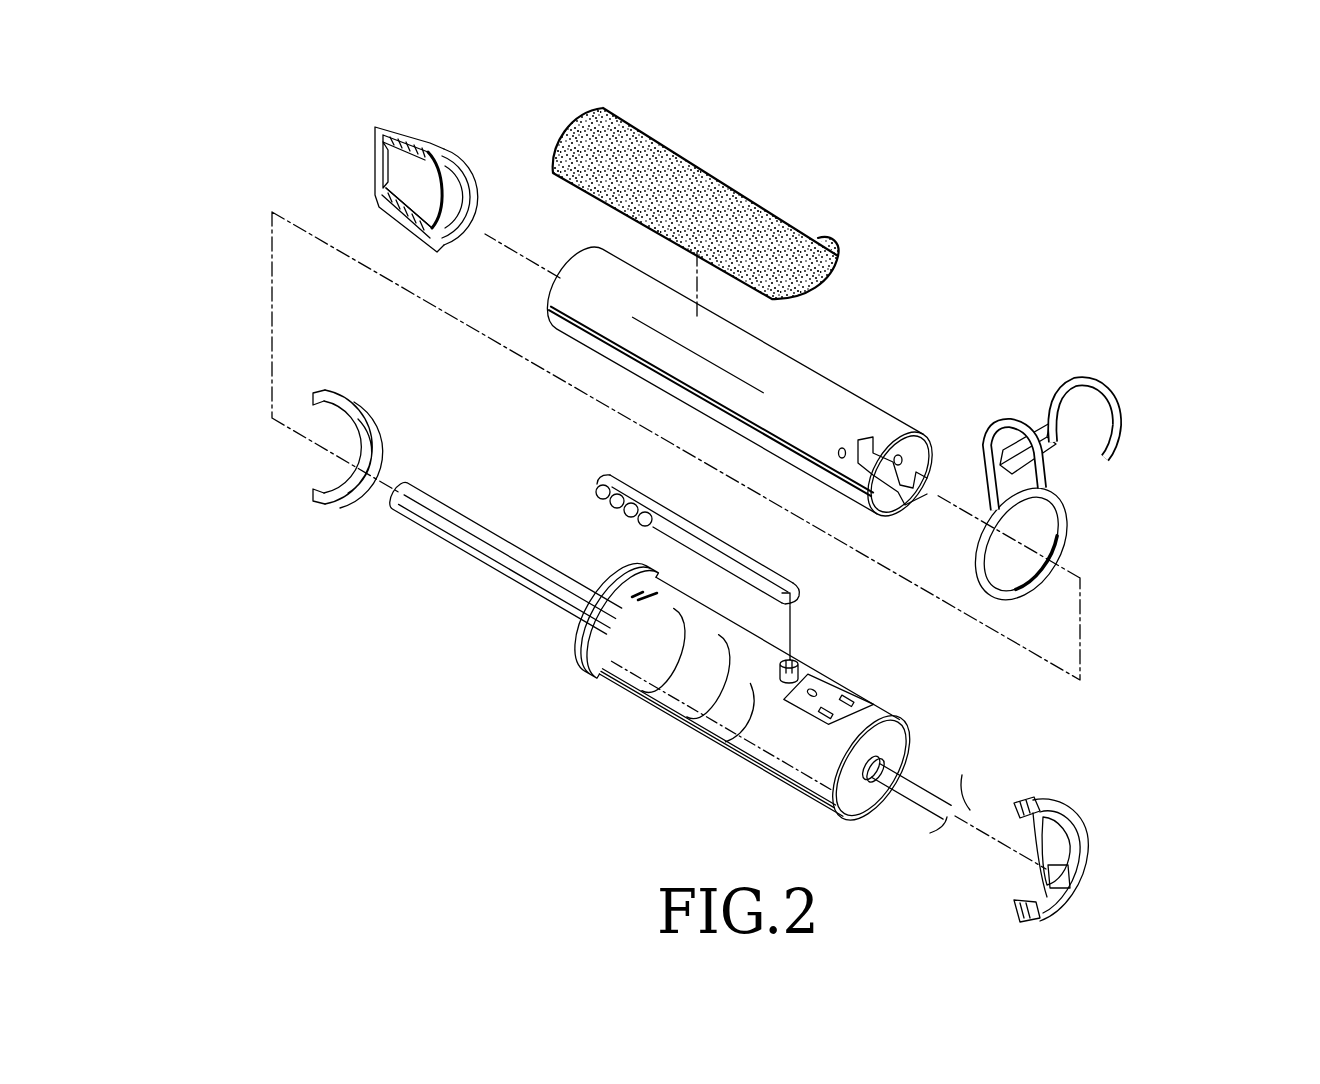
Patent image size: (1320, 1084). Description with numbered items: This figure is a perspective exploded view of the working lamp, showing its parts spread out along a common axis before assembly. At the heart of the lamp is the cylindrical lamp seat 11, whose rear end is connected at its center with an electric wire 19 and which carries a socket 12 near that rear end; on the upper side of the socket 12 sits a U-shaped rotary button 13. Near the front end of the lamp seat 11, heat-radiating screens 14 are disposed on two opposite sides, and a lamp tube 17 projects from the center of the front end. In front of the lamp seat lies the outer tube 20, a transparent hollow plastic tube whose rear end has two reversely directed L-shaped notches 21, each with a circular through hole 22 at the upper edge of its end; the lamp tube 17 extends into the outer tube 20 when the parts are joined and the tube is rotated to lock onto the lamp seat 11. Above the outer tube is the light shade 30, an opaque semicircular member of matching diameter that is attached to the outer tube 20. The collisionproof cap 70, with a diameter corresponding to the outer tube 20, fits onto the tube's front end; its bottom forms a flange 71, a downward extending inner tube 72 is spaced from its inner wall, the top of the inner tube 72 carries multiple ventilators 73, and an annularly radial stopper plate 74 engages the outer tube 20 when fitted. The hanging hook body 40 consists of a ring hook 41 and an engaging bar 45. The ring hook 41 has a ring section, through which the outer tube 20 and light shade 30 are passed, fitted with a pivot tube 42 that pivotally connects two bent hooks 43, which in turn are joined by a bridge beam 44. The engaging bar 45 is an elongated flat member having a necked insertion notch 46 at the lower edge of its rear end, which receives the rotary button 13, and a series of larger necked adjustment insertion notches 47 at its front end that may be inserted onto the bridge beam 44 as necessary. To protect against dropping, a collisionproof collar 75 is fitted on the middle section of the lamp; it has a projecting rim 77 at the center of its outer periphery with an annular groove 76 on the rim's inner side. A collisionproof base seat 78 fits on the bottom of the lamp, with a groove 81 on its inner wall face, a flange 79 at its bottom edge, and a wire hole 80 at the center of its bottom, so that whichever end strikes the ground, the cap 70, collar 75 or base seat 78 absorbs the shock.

The lamp seat 11 is at (700, 733).
The socket 12 is at (832, 688).
The U-shaped rotary button 13 is at (802, 661).
The heat-radiating screens 14 is at (630, 583).
The lamp tube 17 is at (487, 560).
The electric wire 19 is at (902, 789).
The outer tube 20 is at (750, 348).
The L-shaped notches 21 is at (913, 488).
The circular through hole 22 is at (906, 456).
The light shade 30 is at (720, 190).
The hanging hook body 40 is at (1092, 484).
The ring hook 41 is at (1062, 512).
The pivot tube 42 is at (1043, 548).
The bent hooks 43 is at (1103, 408).
The bridge beam 44 is at (1000, 476).
The engaging bar 45 is at (690, 527).
The necked insertion notch 46 is at (800, 598).
The necked adjustment insertion notches 47 is at (597, 490).
The collisionproof cap 70 is at (407, 131).
The flange 71 is at (467, 160).
The inner tube 72 is at (455, 187).
The ventilators 73 is at (382, 162).
The stopper plate 74 is at (393, 217).
The collisionproof collar 75 is at (388, 434).
The annular groove 76 is at (330, 468).
The projecting rim 77 is at (333, 388).
The collisionproof base seat 78 is at (1030, 800).
The flange 79 is at (1060, 806).
The wire hole 80 is at (1071, 887).
The groove 81 is at (1027, 893).